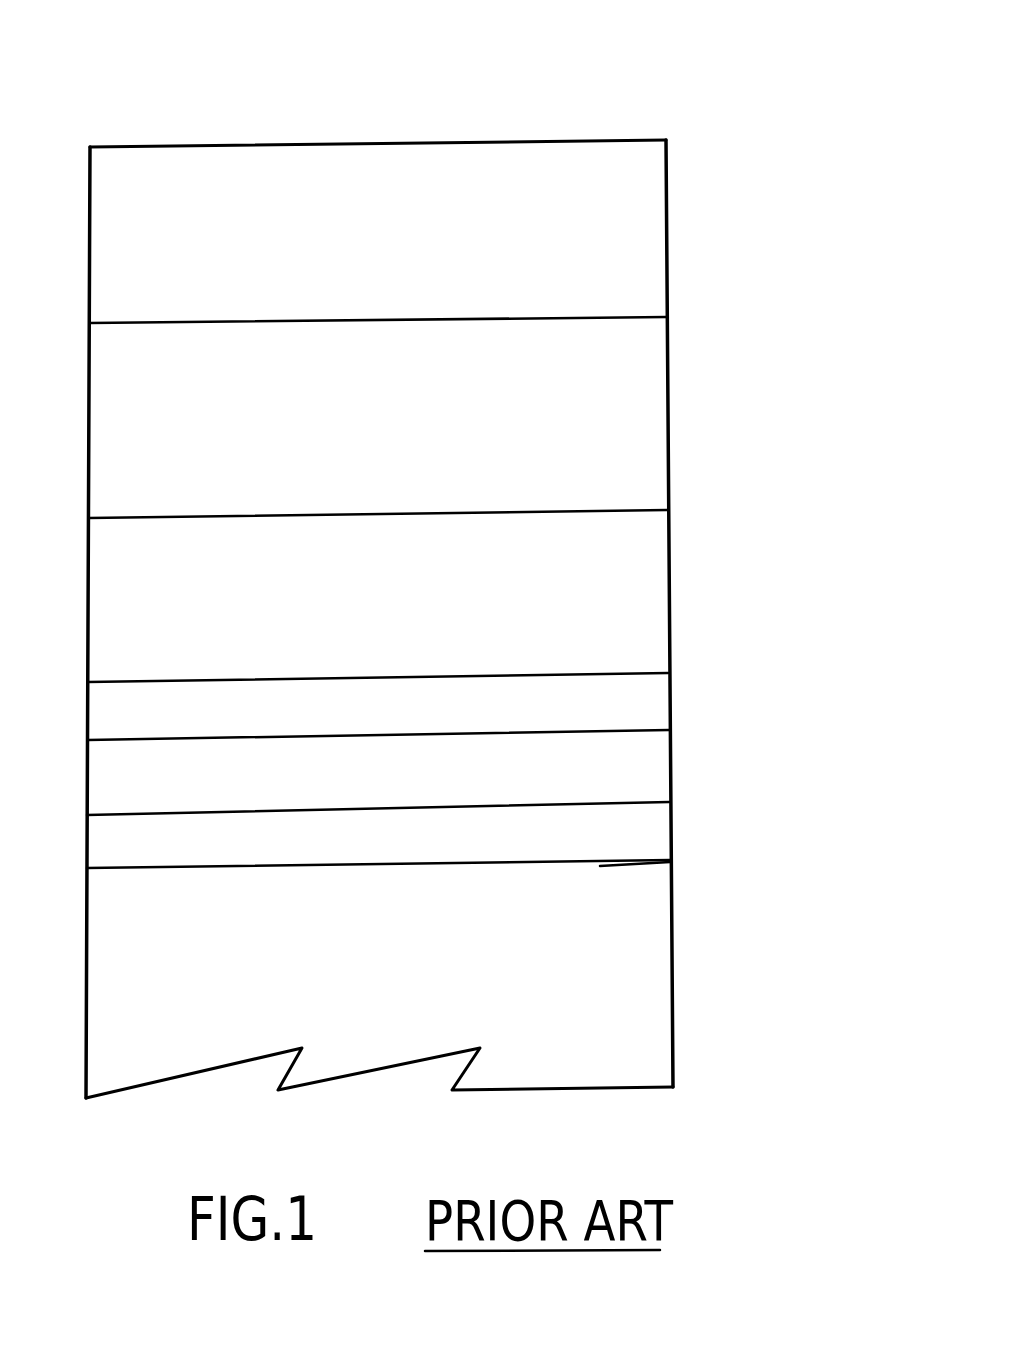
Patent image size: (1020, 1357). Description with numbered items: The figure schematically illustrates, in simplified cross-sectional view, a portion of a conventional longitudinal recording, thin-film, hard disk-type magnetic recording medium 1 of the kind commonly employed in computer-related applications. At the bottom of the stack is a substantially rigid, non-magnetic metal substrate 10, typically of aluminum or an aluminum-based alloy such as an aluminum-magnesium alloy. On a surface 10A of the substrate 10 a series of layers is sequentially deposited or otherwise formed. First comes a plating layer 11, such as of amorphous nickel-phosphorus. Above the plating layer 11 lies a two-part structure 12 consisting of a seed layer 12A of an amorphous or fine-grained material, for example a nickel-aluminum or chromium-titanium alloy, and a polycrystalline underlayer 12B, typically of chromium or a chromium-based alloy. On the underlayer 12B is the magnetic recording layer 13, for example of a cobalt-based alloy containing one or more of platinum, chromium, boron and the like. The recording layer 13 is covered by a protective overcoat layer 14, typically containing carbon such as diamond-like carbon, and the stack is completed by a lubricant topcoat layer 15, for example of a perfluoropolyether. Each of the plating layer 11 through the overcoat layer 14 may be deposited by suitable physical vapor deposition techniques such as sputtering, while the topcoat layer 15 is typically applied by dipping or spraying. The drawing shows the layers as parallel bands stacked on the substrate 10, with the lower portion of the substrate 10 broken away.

The magnetic recording medium 1 is at (496, 549).
The substrate 10 is at (686, 985).
The surface 10A is at (627, 861).
The plating layer 11 is at (686, 837).
The seed layer and underlayer 12 is at (496, 751).
The seed layer 12A is at (686, 770).
The polycrystalline underlayer 12B is at (686, 709).
The magnetic recording layer 13 is at (686, 595).
The protective overcoat layer 14 is at (686, 412).
The lubricant topcoat layer 15 is at (686, 230).